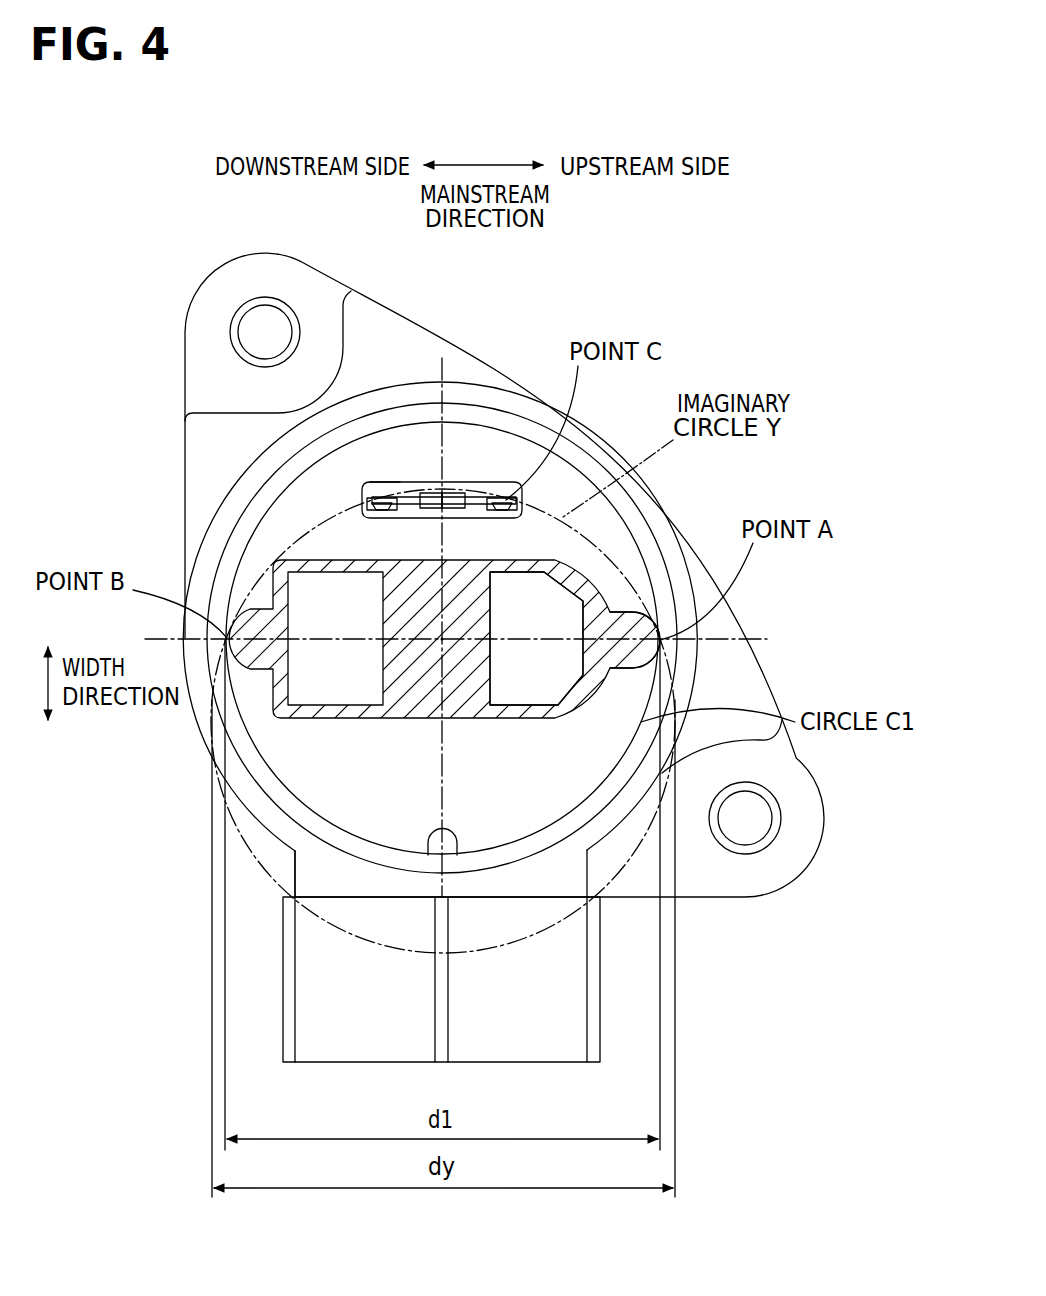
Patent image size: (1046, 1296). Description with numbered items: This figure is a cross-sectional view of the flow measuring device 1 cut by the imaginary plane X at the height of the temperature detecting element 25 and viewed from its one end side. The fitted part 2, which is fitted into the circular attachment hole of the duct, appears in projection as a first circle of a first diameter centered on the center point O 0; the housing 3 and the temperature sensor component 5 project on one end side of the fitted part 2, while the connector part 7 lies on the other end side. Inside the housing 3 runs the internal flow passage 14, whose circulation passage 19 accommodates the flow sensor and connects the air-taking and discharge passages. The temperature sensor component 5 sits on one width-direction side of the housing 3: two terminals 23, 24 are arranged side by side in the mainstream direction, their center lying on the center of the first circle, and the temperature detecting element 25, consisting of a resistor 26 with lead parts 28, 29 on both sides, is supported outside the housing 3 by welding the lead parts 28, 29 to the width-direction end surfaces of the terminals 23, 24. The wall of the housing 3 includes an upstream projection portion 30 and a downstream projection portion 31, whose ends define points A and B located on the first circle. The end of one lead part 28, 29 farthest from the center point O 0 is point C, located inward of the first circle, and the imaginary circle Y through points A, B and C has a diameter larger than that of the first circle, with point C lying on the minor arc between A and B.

The flow measuring device 1 is at (750, 267).
The fitted part 2 is at (563, 457).
The housing 3 is at (574, 574).
The temperature sensor component 5 is at (409, 488).
The connector part 7 is at (565, 1032).
The internal flow passage 14 is at (562, 673).
The circulation passage 19 is at (562, 673).
The terminal 23 is at (502, 493).
The terminal 24 is at (383, 506).
The temperature detecting element 25 is at (449, 489).
The resistor 26 is at (429, 490).
The lead part 28 is at (476, 492).
The lead part 29 is at (367, 492).
The projection portion 30 is at (637, 624).
The projection portion 31 is at (318, 527).
The center point 0 is at (442, 639).